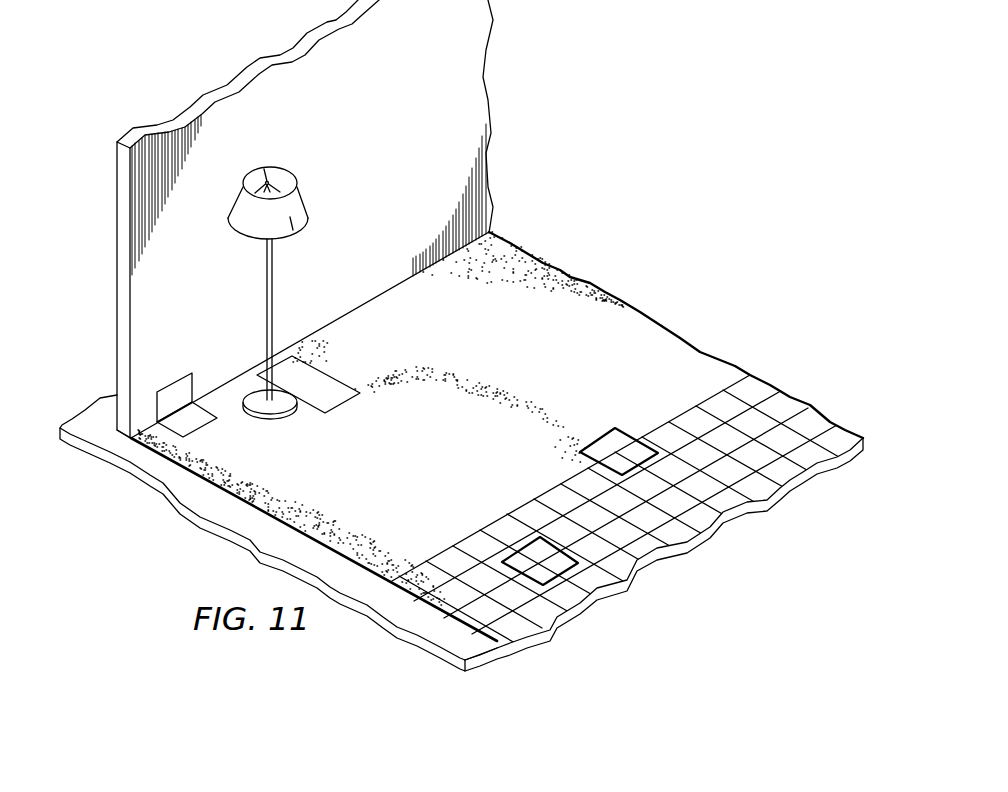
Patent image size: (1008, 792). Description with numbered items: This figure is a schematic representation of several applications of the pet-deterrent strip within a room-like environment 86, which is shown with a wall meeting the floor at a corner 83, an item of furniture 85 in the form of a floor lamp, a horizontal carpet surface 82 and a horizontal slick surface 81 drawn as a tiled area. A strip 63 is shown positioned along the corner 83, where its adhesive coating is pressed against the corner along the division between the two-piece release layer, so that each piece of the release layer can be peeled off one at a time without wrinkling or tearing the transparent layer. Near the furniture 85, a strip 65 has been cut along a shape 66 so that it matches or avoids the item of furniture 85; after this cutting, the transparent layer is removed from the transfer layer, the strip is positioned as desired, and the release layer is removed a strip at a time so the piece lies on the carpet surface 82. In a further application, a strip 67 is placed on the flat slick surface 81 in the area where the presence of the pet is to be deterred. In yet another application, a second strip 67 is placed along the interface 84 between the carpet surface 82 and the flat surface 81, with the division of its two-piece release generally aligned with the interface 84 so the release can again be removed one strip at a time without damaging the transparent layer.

The strip 63 is at (174, 393).
The strip 65 is at (337, 387).
The shape 66 is at (288, 382).
The strip 67 is at (607, 445).
The horizontal slick surface 81 is at (698, 418).
The horizontal carpet surface 82 is at (587, 294).
The corner 83 is at (145, 437).
The interface 84 is at (488, 527).
The furniture 85 is at (267, 293).
The room environment 86 is at (551, 100).